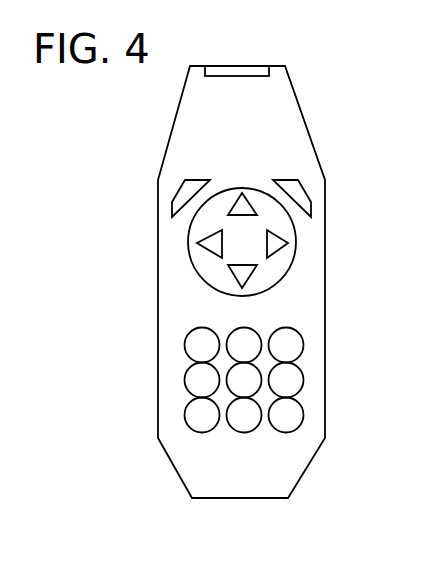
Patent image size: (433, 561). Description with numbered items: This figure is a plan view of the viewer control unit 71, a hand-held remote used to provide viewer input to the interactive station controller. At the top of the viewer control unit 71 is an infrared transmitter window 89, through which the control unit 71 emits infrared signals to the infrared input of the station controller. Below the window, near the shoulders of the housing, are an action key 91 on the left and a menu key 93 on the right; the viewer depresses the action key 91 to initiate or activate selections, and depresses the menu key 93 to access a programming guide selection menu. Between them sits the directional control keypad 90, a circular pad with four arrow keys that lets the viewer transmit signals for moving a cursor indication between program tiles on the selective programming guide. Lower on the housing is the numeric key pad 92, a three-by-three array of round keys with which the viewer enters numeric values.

The viewer control unit 71 is at (308, 130).
The infrared transmitter window 89 is at (225, 66).
The directional control keypad 90 is at (290, 252).
The action key 91 is at (203, 186).
The numeric key pad 92 is at (306, 367).
The menu key 93 is at (280, 186).